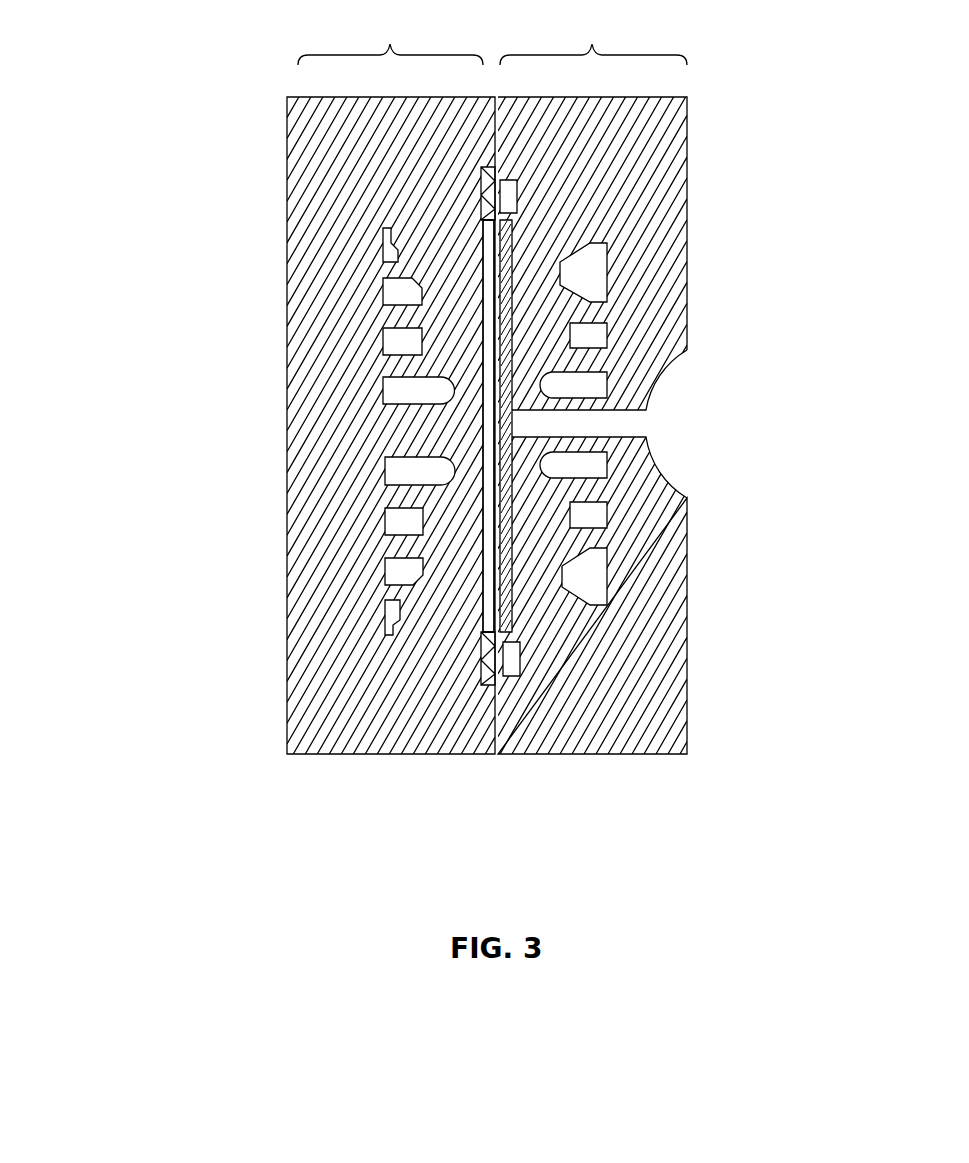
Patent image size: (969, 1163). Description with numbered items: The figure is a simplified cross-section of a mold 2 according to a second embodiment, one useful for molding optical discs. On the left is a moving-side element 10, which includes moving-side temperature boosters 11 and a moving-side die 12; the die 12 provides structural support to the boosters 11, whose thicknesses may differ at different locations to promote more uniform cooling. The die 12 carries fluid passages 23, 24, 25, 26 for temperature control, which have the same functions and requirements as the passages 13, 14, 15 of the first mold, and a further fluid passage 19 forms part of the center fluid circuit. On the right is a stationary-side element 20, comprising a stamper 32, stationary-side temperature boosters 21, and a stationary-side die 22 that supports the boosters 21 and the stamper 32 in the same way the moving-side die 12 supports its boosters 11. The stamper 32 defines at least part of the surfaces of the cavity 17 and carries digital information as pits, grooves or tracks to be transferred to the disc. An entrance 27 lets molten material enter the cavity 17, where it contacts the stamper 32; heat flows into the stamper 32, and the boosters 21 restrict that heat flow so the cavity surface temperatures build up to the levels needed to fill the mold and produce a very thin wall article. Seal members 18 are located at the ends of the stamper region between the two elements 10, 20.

The mold 2 is at (472, 777).
The moving-side element 10 is at (390, 39).
The stationary-side element 20 is at (593, 44).
The moving-side temperature boosters 11 is at (490, 518).
The moving-side die 12 is at (360, 668).
The fluid passage 13 is at (413, 390).
The fluid passage 14 is at (410, 342).
The fluid passage 15 is at (407, 294).
The cavity 17 is at (488, 458).
The lower seal 18 is at (497, 676).
The fluid passage 19 is at (383, 243).
The stationary-side temperature boosters 21 is at (512, 532).
The stationary-side die 22 is at (620, 690).
The fluid passage 23 is at (590, 388).
The fluid passage 24 is at (597, 335).
The fluid passage 25 is at (600, 272).
The fluid passage 26 is at (518, 195).
The entrance 27 is at (625, 426).
The stamper 32 is at (516, 484).